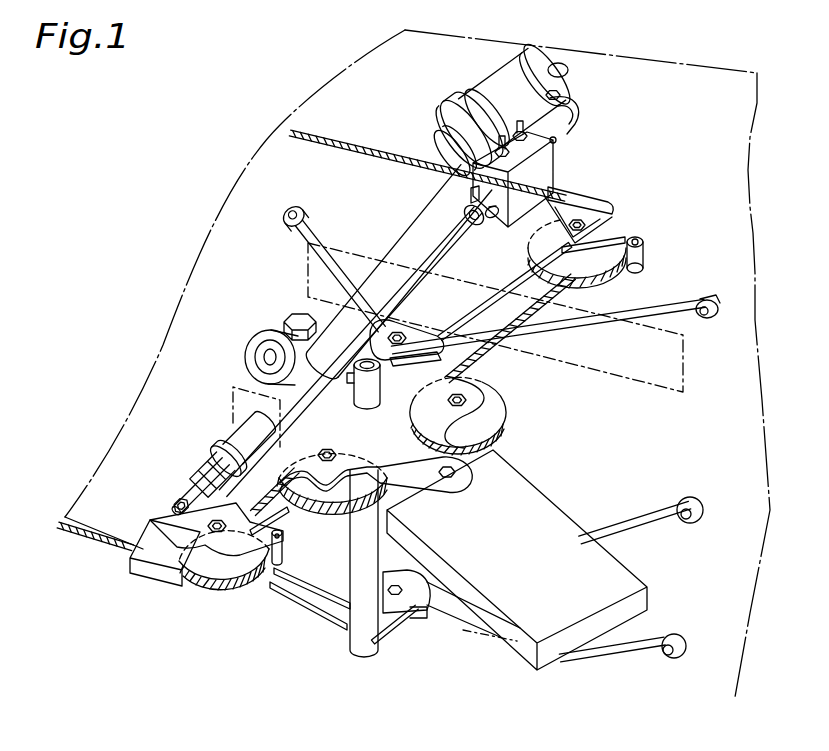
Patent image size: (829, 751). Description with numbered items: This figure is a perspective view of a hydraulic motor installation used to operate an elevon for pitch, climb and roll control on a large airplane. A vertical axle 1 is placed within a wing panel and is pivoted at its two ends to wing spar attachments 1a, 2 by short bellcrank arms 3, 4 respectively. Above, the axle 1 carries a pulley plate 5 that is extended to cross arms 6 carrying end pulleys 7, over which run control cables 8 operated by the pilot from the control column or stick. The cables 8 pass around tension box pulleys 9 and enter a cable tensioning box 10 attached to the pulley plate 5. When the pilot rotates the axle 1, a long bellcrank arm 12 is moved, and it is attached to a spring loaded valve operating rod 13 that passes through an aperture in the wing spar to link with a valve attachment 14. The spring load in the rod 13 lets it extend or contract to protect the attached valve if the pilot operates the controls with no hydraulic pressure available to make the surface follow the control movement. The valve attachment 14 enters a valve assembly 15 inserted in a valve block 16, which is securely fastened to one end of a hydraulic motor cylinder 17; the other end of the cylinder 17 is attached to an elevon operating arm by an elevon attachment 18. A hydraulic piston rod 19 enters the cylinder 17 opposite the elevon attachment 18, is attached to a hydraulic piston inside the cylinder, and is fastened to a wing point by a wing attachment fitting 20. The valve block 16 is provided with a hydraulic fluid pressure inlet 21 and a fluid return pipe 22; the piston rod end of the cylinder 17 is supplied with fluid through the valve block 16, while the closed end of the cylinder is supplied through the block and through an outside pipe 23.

The vertical axle 1 is at (360, 580).
The wing spar attachment 1a is at (540, 340).
The wing spar attachment 2 is at (660, 520).
The short bellcrank arm 3 is at (372, 383).
The short bellcrank arm 4 is at (392, 622).
The pulley plate 5 is at (362, 312).
The cross arms 6 is at (410, 378).
The end pulleys 7 is at (603, 257).
The control cables 8 is at (397, 157).
The tension box pulleys 9 is at (490, 418).
The cable tensioning box 10 is at (517, 560).
The long bellcrank arm 12 is at (310, 573).
The spring loaded valve operating rod 13 is at (263, 408).
The valve attachment 14 is at (460, 226).
The valve assembly 15 is at (491, 216).
The valve block 16 is at (547, 175).
The hydraulic motor cylinder 17 is at (500, 95).
The elevon attachment 18 is at (568, 70).
The hydraulic piston rod 19 is at (410, 210).
The wing attachment fitting 20 is at (246, 366).
The hydraulic fluid pressure inlet 21 is at (556, 140).
The fluid return pipe 22 is at (452, 122).
The outside pipe 23 is at (570, 118).